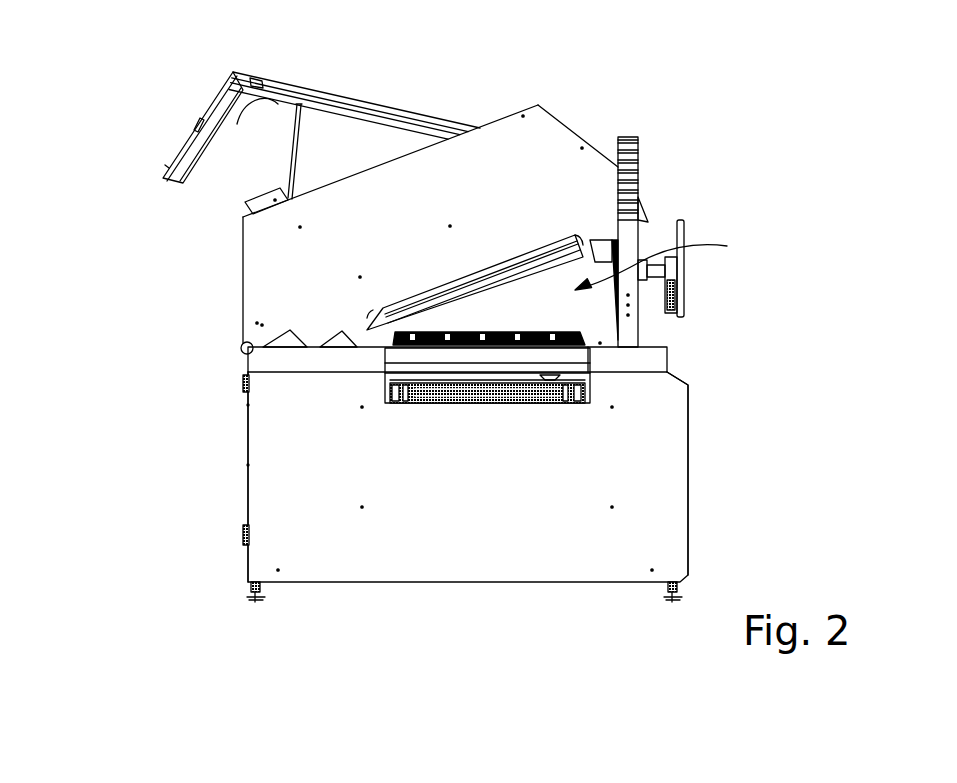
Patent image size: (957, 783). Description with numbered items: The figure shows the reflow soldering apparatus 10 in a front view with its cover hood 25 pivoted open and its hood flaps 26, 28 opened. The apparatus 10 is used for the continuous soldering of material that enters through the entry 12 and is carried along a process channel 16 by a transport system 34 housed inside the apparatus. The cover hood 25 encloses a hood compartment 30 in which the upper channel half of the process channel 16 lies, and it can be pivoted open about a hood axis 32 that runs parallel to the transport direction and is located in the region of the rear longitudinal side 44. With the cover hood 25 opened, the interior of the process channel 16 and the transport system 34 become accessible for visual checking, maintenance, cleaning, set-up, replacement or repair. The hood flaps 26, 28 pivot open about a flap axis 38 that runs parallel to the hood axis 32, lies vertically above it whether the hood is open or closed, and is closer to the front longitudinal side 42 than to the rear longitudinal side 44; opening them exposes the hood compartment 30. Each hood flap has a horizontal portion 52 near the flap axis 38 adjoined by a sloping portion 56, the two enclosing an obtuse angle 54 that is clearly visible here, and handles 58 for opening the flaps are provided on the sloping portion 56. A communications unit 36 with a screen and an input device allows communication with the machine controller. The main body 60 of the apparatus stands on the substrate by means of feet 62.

The reflow soldering apparatus 10 is at (424, 349).
The entry 12 is at (513, 372).
The process channel 16 is at (665, 262).
The cover hood 25 is at (557, 137).
The hood flap 26 is at (354, 96).
The hood flap 28 is at (317, 88).
The hood compartment 30 is at (343, 150).
The hood axis 32 is at (242, 348).
The transport system 34 is at (432, 403).
The communications unit 36 is at (700, 280).
The flap axis 38 is at (477, 127).
The front longitudinal side 42 is at (688, 495).
The rear longitudinal side 44 is at (248, 440).
The horizontal portion 52 is at (253, 80).
The obtuse angle 54 is at (257, 127).
The sloping portion 56 is at (215, 97).
The handle 58 is at (167, 163).
The main body 60 is at (667, 412).
The foot 62 is at (255, 605).